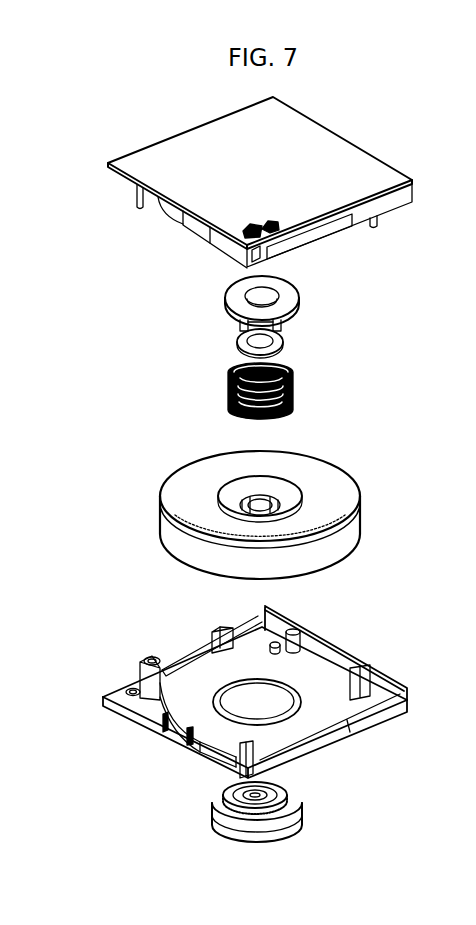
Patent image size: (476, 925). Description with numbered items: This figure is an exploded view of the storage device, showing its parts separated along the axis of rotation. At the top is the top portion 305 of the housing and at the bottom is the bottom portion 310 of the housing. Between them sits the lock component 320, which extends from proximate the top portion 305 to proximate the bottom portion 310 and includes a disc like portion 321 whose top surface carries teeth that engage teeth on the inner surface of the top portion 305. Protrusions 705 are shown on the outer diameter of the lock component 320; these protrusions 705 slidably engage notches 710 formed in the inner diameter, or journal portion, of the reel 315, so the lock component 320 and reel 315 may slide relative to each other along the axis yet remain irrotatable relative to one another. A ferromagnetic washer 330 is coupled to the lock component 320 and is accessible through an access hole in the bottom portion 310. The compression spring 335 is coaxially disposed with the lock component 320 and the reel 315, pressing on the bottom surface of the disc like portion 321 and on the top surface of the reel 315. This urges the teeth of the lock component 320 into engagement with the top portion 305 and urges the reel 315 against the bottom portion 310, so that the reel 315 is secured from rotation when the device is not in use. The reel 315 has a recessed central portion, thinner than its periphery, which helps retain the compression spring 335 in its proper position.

The top portion 305 is at (121, 132).
The lock component 320 is at (286, 310).
The disc like portion 321 is at (297, 284).
The protrusions 705 is at (283, 325).
The ferromagnetic washer 330 is at (237, 345).
The compression spring 335 is at (293, 387).
The reel 315 is at (219, 498).
The notches 710 is at (262, 508).
The bottom portion 310 is at (193, 683).